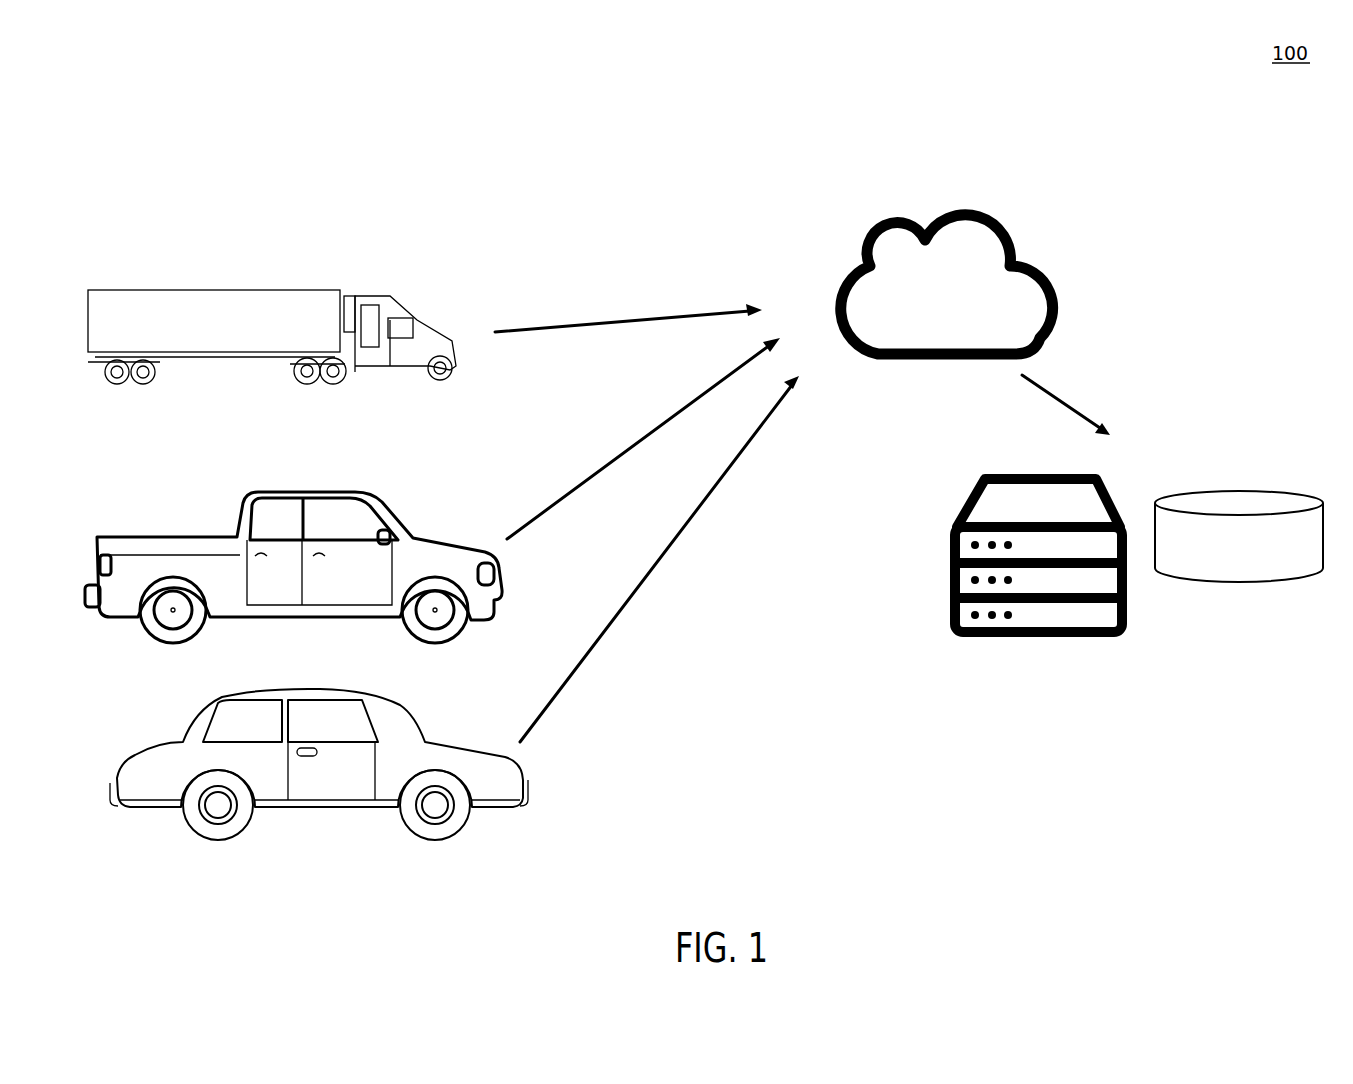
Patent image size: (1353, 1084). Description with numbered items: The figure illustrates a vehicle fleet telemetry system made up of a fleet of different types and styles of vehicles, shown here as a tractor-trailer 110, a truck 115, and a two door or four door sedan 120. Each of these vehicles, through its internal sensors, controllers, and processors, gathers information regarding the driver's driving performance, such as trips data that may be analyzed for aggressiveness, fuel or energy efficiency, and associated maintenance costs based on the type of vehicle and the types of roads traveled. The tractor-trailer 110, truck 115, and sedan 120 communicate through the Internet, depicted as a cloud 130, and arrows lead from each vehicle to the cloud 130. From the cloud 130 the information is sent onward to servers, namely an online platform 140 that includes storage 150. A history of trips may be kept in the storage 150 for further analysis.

The tractor-trailer 110 is at (240, 290).
The truck 115 is at (243, 494).
The sedan 120 is at (180, 743).
The cloud 130 is at (835, 263).
The online platform 140 is at (950, 615).
The storage 150 is at (1247, 583).